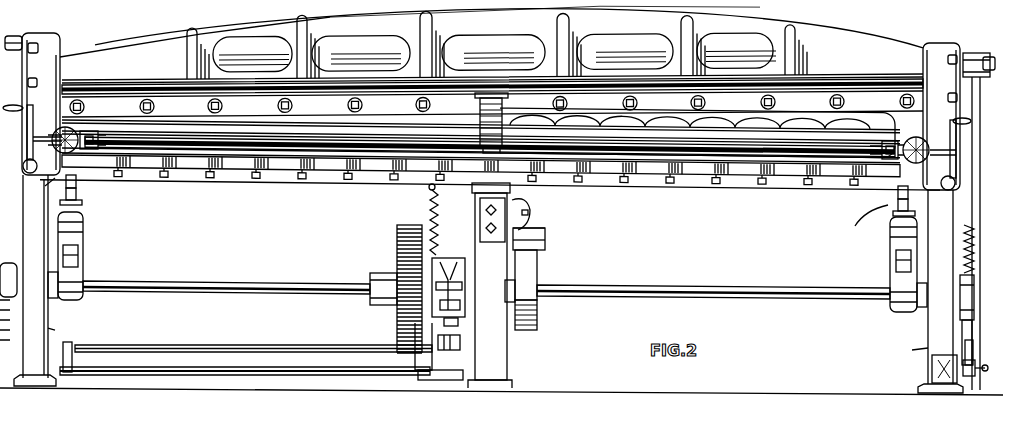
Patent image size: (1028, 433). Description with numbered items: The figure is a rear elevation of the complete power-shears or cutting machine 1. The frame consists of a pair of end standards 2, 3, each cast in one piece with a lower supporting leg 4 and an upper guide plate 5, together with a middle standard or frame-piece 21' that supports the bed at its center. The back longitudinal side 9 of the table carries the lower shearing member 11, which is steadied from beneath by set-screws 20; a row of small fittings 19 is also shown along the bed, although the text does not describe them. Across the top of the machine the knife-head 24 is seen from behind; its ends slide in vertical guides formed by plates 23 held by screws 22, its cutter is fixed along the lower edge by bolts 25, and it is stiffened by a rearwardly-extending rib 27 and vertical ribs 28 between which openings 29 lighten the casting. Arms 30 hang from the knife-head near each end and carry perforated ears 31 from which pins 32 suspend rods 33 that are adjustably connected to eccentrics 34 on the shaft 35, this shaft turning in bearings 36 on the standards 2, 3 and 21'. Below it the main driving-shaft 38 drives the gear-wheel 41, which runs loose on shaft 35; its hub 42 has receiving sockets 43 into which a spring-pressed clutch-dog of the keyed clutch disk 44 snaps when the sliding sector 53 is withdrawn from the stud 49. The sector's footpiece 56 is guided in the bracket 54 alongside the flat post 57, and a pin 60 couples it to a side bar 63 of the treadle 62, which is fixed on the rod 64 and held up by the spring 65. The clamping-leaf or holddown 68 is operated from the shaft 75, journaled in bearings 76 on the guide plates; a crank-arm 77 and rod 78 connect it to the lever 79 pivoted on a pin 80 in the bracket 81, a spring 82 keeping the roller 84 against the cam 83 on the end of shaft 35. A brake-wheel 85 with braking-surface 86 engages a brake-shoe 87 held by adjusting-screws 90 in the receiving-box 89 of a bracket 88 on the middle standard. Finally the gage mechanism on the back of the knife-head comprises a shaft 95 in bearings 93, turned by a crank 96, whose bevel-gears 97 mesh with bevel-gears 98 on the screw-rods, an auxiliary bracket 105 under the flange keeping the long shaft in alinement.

The complete machine 1 is at (734, 246).
The end standard 2 is at (940, 291).
The end standard 3 is at (35, 280).
The lower supporting leg 4 is at (525, 185).
The upper guide plate 5 is at (911, 13).
The longitudinal side 9 is at (724, 165).
The shearing member 11 is at (252, 154).
The clamp 19 is at (212, 168).
The set-screw 20 is at (166, 177).
The standard or frame-piece 21' is at (506, 285).
The screw or bolt 22 is at (28, 80).
The plate 23 is at (35, 53).
The knife-head 24 is at (282, 24).
The bolt 25 is at (204, 107).
The rearwardly-extending rib 27 is at (158, 86).
The vertically-arranged rib 28 is at (192, 34).
The opening 29 is at (253, 38).
The arm 30 is at (910, 125).
The perforated ear 31 is at (78, 182).
The pin 32 is at (457, 210).
The rod 33 is at (82, 203).
The eccentric 34 is at (84, 270).
The shaft 35 is at (180, 280).
The bearing 36 is at (55, 298).
The main driving-shaft 38 is at (19, 272).
The gear-wheel 41 is at (400, 228).
The hub 42 is at (444, 258).
The receiving socket 43 is at (428, 282).
The clutch disk 44 is at (452, 264).
The stud or spur 49 is at (458, 323).
The sliding sector 53 is at (460, 306).
The bracket 54 is at (440, 381).
The footpiece 56 is at (460, 342).
The projection or flat post 57 is at (414, 330).
The pin 60 is at (478, 8).
The treadle 62 is at (216, 348).
The side bar 63 is at (75, 352).
The rod 64 is at (772, 24).
The spring 65 is at (438, 222).
The clamping-leaf or holddown 68 is at (697, 133).
The shaft 75 is at (743, 50).
The bearing 76 is at (40, 33).
The crank-arm 77 is at (987, 54).
The rod or link 78 is at (982, 116).
The lever 79 is at (975, 349).
The pin 80 is at (986, 370).
The bracket 81 is at (932, 370).
The spring 82 is at (978, 244).
The cam 83 is at (975, 293).
The roller 84 is at (975, 336).
The brake-wheel 85 is at (538, 310).
The braking-surface 86 is at (537, 258).
The brake-shoe 87 is at (545, 245).
The bracket 88 is at (506, 205).
The receiving-box 89 is at (545, 232).
The adjusting-screw 90 is at (530, 215).
The bearing 93 is at (27, 148).
The shaft 95 is at (300, 148).
The crank 96 is at (997, 167).
The bevel-gear 97 is at (80, 138).
The bevel-gear 98 is at (60, 128).
The auxiliary bracket 105 is at (502, 108).